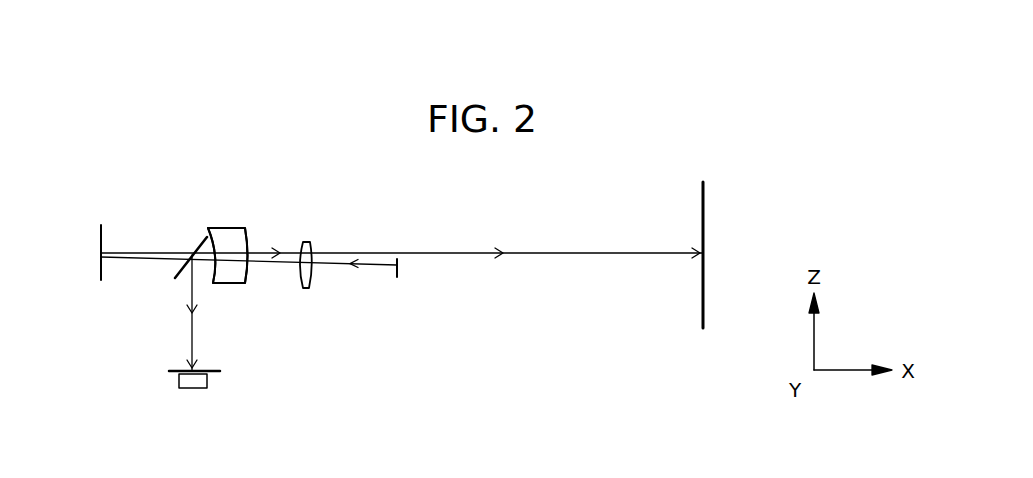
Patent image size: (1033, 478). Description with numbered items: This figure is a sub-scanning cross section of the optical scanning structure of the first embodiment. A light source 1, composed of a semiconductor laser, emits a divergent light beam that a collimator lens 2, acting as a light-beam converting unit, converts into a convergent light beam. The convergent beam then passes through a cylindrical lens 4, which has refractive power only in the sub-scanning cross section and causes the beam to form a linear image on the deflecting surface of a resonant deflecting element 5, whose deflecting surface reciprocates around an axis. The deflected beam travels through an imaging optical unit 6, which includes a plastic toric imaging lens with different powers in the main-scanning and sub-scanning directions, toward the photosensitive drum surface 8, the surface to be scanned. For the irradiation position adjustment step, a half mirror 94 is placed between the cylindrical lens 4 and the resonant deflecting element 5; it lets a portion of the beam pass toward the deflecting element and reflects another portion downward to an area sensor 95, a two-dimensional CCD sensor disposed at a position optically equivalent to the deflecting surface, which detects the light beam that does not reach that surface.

The light source 1 is at (397, 277).
The collimator lens 2 is at (305, 288).
The cylindrical lens 4 is at (232, 283).
The resonant deflecting element 5 is at (101, 252).
The imaging optical unit 6 is at (222, 237).
The photosensitive drum surface 8 is at (702, 313).
The half mirror 94 is at (197, 242).
The area sensor 95 is at (190, 387).